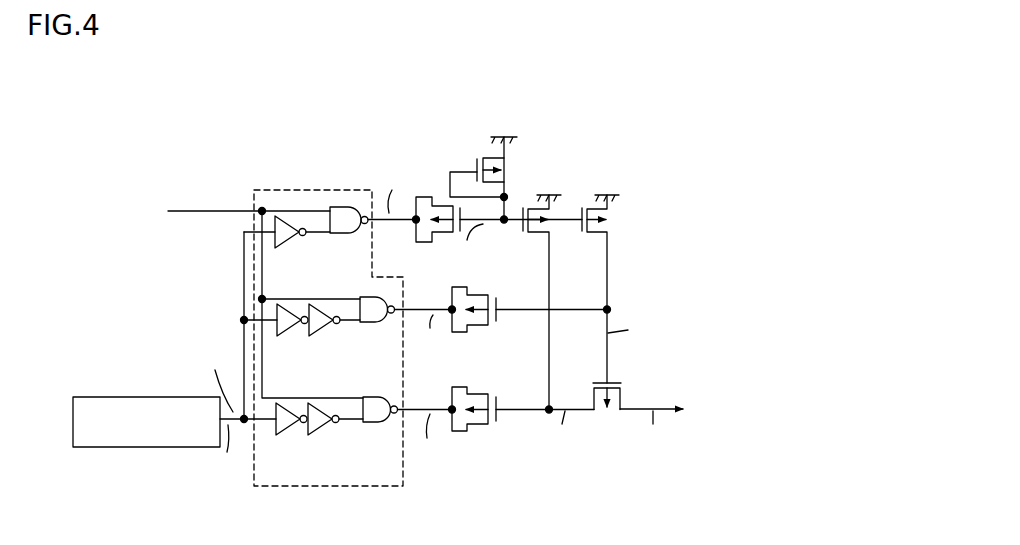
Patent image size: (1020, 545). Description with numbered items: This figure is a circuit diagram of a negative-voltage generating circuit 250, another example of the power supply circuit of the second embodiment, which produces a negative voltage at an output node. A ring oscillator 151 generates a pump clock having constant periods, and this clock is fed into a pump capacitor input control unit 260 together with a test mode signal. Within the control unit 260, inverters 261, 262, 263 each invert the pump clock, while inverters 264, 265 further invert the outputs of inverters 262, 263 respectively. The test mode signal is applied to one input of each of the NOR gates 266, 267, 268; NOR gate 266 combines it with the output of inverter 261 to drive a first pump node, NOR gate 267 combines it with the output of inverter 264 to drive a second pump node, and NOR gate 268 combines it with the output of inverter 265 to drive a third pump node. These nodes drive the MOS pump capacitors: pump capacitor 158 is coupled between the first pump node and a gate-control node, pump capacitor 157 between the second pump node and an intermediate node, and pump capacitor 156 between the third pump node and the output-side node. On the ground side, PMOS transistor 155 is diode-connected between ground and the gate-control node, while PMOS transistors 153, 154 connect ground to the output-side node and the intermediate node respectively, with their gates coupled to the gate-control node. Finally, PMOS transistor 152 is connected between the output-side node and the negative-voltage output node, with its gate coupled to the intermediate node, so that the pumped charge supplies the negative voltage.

The negative-voltage generating circuit 250 is at (719, 78).
The pump capacitor input control unit 260 is at (312, 190).
The inverter 261 is at (290, 243).
The inverter 262 is at (295, 333).
The inverter 263 is at (292, 428).
The inverter 264 is at (327, 330).
The inverter 265 is at (322, 429).
The NOR gate 266 is at (340, 236).
The NOR gate 267 is at (390, 297).
The NOR gate 268 is at (377, 397).
The ring oscillator 151 is at (166, 450).
The PMOS transistor 152 is at (614, 411).
The PMOS transistor 153 is at (546, 227).
The PMOS transistor 154 is at (603, 210).
The PMOS transistor 155 is at (500, 166).
The pump capacitor 156 is at (486, 393).
The pump capacitor 157 is at (486, 292).
The pump capacitor 158 is at (424, 194).